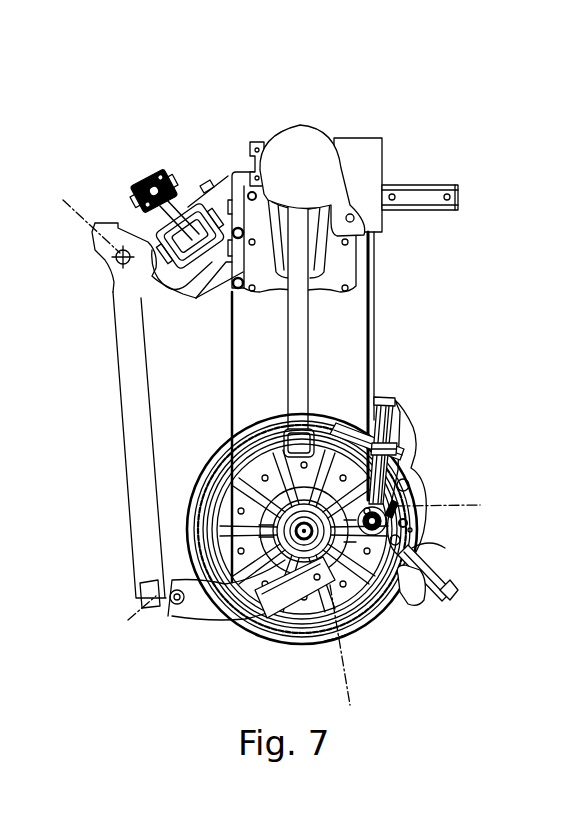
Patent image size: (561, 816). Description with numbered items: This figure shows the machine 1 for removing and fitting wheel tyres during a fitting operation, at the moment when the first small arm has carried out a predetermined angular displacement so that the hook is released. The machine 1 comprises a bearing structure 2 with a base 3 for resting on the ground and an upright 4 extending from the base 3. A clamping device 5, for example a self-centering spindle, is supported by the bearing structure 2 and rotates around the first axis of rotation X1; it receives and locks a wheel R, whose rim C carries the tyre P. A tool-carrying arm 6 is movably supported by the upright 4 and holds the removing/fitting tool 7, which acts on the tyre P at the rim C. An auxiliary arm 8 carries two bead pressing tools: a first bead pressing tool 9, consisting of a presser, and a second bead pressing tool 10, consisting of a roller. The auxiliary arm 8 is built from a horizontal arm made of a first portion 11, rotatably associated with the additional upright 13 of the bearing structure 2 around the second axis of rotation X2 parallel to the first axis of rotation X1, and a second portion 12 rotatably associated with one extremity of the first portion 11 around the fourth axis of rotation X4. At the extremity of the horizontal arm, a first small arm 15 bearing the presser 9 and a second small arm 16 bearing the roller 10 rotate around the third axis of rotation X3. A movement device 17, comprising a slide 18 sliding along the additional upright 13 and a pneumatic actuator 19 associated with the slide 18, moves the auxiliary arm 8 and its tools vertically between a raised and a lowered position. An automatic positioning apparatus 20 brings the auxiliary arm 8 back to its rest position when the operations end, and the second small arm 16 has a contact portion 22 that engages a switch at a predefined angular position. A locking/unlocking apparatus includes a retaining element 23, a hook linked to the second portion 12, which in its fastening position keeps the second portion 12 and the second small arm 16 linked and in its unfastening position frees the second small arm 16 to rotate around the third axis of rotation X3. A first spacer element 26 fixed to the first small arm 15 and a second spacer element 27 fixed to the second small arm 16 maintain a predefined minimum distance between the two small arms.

The machine 1 is at (107, 90).
The bearing structure 2 is at (376, 152).
The base 3 is at (360, 352).
The upright 4 is at (297, 152).
The clamping device 5 is at (236, 470).
The tool-carrying arm 6 is at (298, 430).
The removing/fitting tool 7 is at (272, 418).
The auxiliary arm 8 is at (126, 470).
The first bead pressing tool 9 is at (418, 608).
The second bead pressing tool 10 is at (366, 430).
The first portion of the horizontal arm 11 is at (113, 306).
The second portion of the horizontal arm 12 is at (212, 602).
The additional upright 13 is at (206, 192).
The first small arm 15 is at (448, 600).
The second small arm 16 is at (398, 408).
The movement device 17 is at (134, 190).
The slide 18 is at (180, 296).
The pneumatic actuator 19 is at (151, 180).
The automatic positioning apparatus 20 is at (278, 626).
The contact portion 22 is at (406, 479).
The retaining element 23 is at (445, 550).
The first spacer element 26 is at (420, 524).
The second spacer element 27 is at (412, 448).
The rim C is at (186, 522).
The tyre P is at (302, 645).
The wheel R is at (362, 640).
The first axis of rotation X1 is at (349, 653).
The second axis of rotation X2 is at (81, 213).
The third axis of rotation X3 is at (434, 513).
The fourth axis of rotation X4 is at (128, 620).